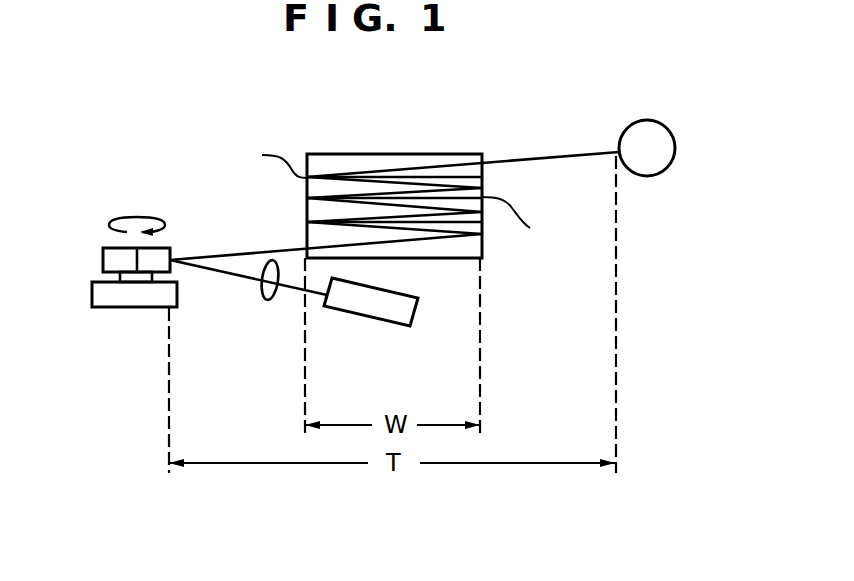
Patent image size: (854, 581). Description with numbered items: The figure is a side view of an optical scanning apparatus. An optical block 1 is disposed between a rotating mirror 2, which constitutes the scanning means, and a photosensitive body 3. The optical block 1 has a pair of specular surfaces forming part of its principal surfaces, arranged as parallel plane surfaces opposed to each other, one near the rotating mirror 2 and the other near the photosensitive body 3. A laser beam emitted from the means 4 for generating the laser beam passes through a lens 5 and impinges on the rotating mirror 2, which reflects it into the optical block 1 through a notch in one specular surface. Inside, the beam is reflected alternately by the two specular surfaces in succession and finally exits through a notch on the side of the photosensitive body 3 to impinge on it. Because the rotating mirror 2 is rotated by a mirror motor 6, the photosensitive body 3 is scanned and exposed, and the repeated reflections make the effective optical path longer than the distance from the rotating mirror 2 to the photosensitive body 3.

The optical block 1 is at (415, 154).
The rotating mirror 2 is at (103, 262).
The photosensitive body 3 is at (659, 176).
The means for generating laser beam 4 is at (405, 327).
The lens 5 is at (265, 300).
The mirror motor 6 is at (97, 308).